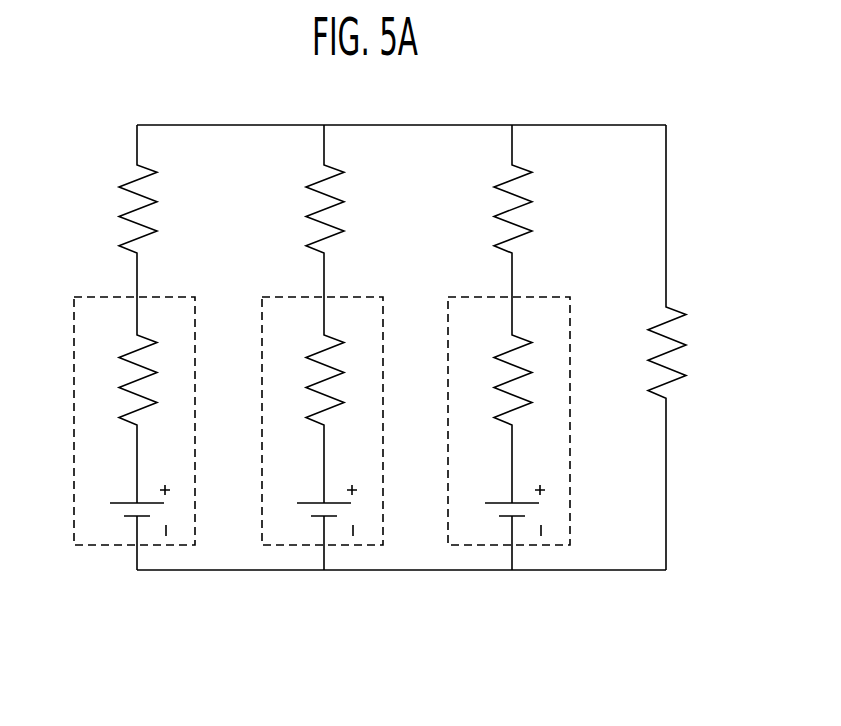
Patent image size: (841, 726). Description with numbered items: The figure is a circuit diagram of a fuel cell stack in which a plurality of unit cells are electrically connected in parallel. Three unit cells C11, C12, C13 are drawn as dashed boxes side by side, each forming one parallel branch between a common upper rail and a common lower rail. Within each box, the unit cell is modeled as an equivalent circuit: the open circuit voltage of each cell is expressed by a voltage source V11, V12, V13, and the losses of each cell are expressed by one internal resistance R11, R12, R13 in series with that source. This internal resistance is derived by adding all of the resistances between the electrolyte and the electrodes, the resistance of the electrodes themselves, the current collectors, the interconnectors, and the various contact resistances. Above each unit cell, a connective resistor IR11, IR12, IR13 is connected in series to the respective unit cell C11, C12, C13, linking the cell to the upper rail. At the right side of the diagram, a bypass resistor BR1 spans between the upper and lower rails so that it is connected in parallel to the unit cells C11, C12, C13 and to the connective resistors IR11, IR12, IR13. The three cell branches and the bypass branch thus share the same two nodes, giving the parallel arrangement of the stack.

The connective resistor IR11 is at (157, 211).
The connective resistor IR12 is at (344, 211).
The connective resistor IR13 is at (532, 211).
The unit cell C11 is at (134, 433).
The unit cell C12 is at (322, 433).
The unit cell C13 is at (509, 433).
The internal resistance R11 is at (122, 400).
The internal resistance R12 is at (309, 400).
The internal resistance R13 is at (497, 400).
The voltage source V11 is at (131, 519).
The voltage source V12 is at (318, 519).
The voltage source V13 is at (506, 519).
The bypass resistor BR1 is at (684, 347).